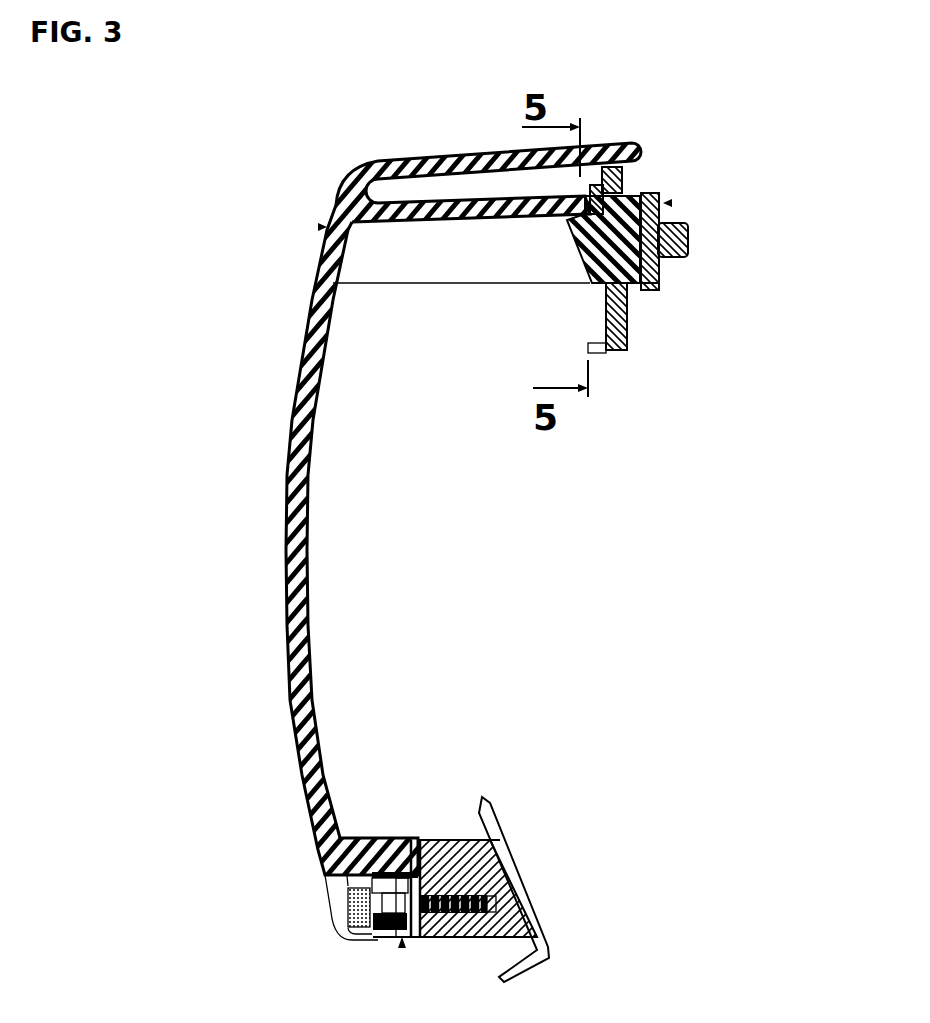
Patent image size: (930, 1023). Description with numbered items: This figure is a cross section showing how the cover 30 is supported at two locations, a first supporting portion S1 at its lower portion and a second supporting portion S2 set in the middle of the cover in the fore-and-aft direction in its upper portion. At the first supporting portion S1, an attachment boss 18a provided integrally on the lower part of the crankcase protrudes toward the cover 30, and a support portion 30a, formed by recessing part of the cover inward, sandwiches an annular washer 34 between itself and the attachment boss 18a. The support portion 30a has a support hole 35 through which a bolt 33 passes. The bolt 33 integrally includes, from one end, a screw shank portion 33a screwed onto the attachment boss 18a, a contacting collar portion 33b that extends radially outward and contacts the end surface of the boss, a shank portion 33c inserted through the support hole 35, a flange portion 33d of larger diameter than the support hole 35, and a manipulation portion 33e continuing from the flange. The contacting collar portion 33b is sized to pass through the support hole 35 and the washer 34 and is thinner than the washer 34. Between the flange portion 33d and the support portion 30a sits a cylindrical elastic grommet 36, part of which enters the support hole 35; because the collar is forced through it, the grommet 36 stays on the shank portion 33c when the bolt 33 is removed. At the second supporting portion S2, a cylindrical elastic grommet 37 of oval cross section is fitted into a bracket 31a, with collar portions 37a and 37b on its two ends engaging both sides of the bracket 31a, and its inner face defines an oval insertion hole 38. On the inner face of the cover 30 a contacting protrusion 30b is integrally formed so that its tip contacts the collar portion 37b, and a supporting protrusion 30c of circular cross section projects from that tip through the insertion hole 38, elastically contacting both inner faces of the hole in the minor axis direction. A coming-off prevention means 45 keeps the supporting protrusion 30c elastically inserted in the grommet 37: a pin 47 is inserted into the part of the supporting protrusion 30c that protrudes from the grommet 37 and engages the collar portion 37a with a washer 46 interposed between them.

The cover 30 is at (414, 488).
The support portion 30a is at (378, 940).
The contacting protrusion 30b is at (470, 207).
The supporting protrusion 30c is at (690, 249).
The bracket 31a is at (628, 318).
The bolt 33 is at (482, 924).
The screw shank portion 33a is at (507, 840).
The contacting collar portion 33b is at (440, 937).
The shank portion 33c is at (412, 845).
The flange portion 33d is at (320, 857).
The manipulation portion 33e is at (350, 908).
The annular washer 34 is at (436, 840).
The support hole 35 is at (410, 930).
The grommet 36 is at (388, 858).
The grommet 37 is at (580, 267).
The collar portion 37a is at (630, 193).
The collar portion 37b is at (598, 168).
The insertion hole 38 is at (582, 250).
The coming-off prevention means 45 is at (668, 203).
The washer 46 is at (643, 290).
The pin 47 is at (657, 282).
The attachment boss 18a is at (458, 837).
The first supporting portion S1 is at (402, 945).
The second supporting portion S2 is at (320, 227).